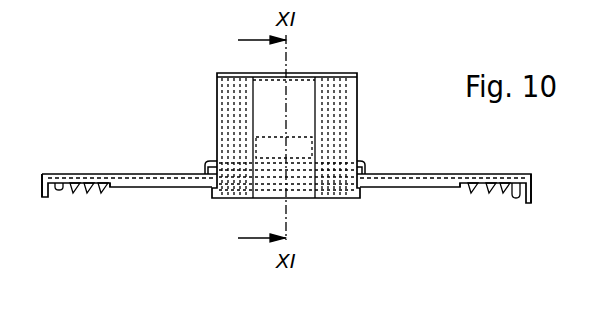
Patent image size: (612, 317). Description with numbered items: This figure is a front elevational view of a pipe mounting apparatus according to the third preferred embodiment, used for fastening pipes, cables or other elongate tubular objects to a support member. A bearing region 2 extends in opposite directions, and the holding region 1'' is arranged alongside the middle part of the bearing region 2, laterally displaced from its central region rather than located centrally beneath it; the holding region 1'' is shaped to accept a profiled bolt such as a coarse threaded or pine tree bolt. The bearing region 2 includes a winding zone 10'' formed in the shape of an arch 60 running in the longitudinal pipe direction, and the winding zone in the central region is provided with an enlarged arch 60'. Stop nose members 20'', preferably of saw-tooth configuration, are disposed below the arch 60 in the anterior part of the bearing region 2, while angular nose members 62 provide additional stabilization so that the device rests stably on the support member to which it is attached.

The holding region 1'' is at (323, 130).
The bearing region 2 is at (94, 160).
The winding zone 10'' is at (285, 138).
The arch 60 is at (298, 148).
The enlarged arch 60' is at (389, 157).
The stop nose member 20'' is at (290, 224).
The angular nose member 62 is at (45, 198).